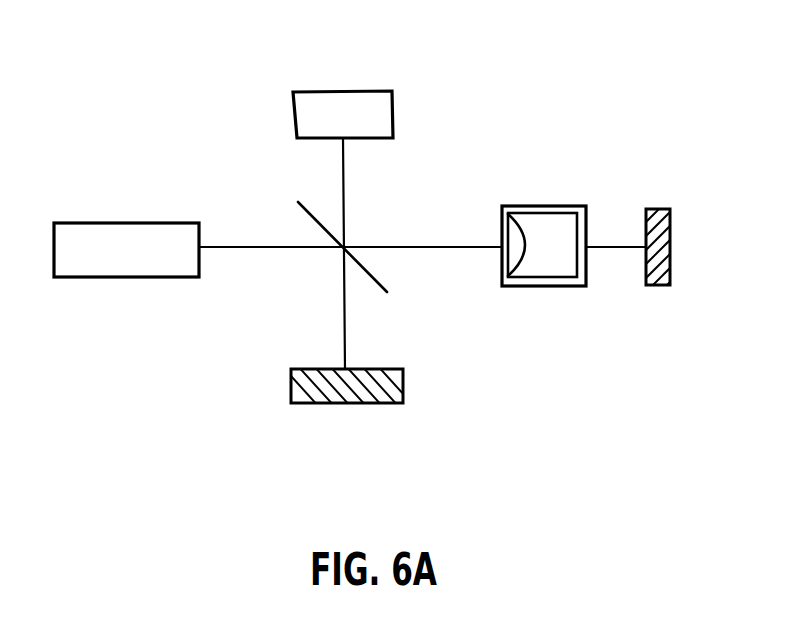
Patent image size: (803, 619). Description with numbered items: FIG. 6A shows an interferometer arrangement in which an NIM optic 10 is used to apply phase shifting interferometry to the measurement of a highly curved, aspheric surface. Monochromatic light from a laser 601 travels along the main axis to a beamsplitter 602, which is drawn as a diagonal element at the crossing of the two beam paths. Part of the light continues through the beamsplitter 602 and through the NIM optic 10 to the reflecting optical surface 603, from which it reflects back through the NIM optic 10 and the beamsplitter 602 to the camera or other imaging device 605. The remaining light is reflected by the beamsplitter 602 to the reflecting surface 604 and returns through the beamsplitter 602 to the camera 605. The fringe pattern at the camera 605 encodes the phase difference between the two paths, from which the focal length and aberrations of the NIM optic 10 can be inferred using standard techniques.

The laser light source 601 is at (126, 222).
The beamsplitter 602 is at (327, 230).
The reflecting optical surface 603 is at (672, 247).
The reflecting surface 604 is at (350, 404).
The camera or other imaging device 605 is at (368, 90).
The NIM optic 10 is at (540, 205).